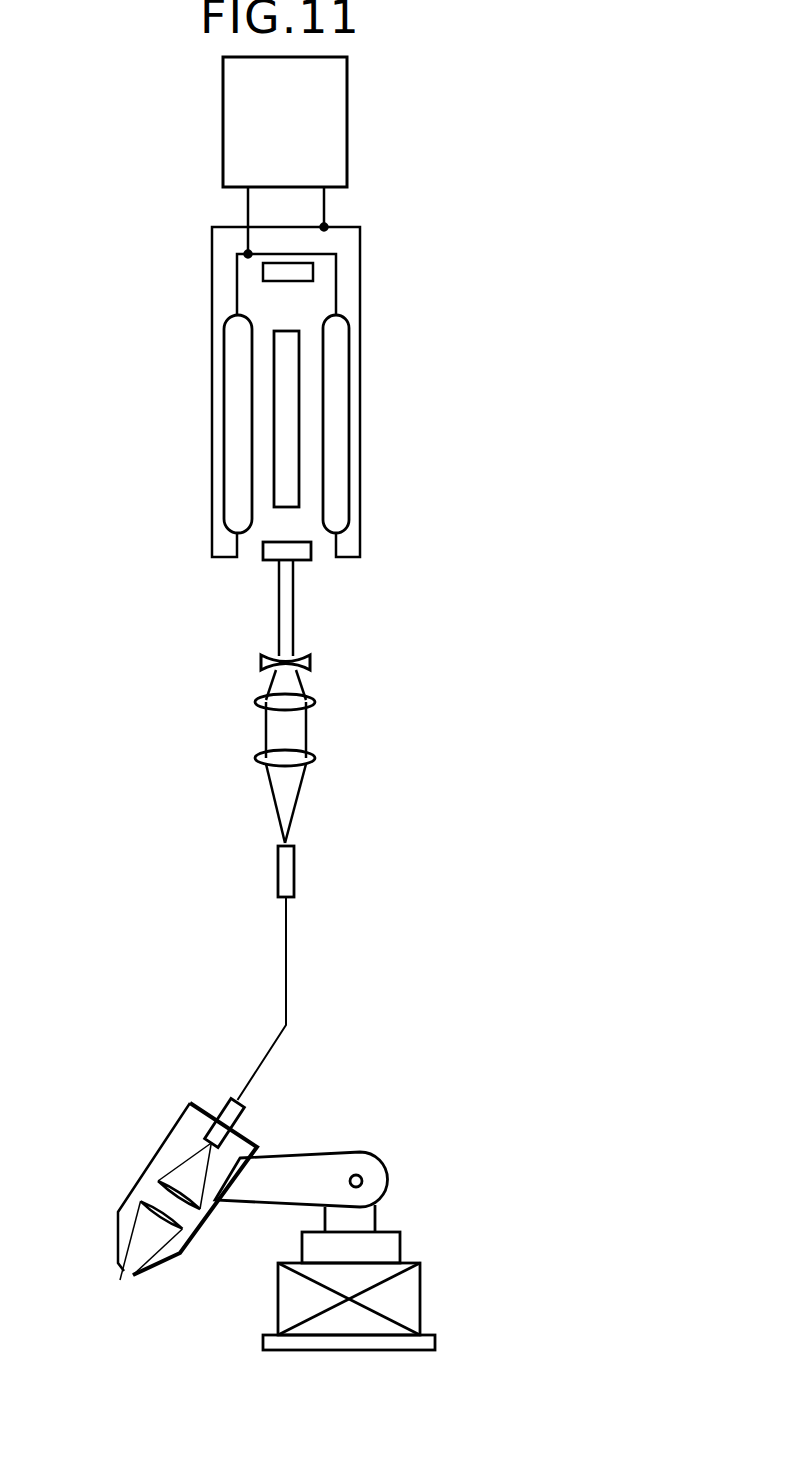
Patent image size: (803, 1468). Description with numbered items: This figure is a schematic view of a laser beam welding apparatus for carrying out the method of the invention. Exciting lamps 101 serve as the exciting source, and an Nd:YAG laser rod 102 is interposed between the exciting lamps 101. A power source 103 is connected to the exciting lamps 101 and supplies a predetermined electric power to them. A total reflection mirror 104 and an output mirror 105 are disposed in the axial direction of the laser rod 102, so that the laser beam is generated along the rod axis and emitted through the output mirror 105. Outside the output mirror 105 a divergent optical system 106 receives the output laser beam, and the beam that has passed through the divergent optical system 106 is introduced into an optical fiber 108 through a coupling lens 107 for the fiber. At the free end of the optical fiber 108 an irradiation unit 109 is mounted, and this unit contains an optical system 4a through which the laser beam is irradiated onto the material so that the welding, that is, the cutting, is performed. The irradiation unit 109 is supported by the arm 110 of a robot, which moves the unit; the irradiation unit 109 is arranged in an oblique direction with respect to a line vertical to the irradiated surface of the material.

The power source 103 is at (347, 118).
The total reflection mirror 104 is at (313, 270).
The exciting lamps 101 is at (224, 440).
The Nd:YAG laser rod 102 is at (299, 375).
The output mirror 105 is at (311, 560).
The divergent optical system 106 is at (310, 662).
The coupling lens 107 is at (315, 758).
The optical fiber 108 is at (286, 1025).
The irradiation unit 109 is at (195, 1243).
The optical system 4a is at (150, 1188).
The arm 110 is at (310, 1167).